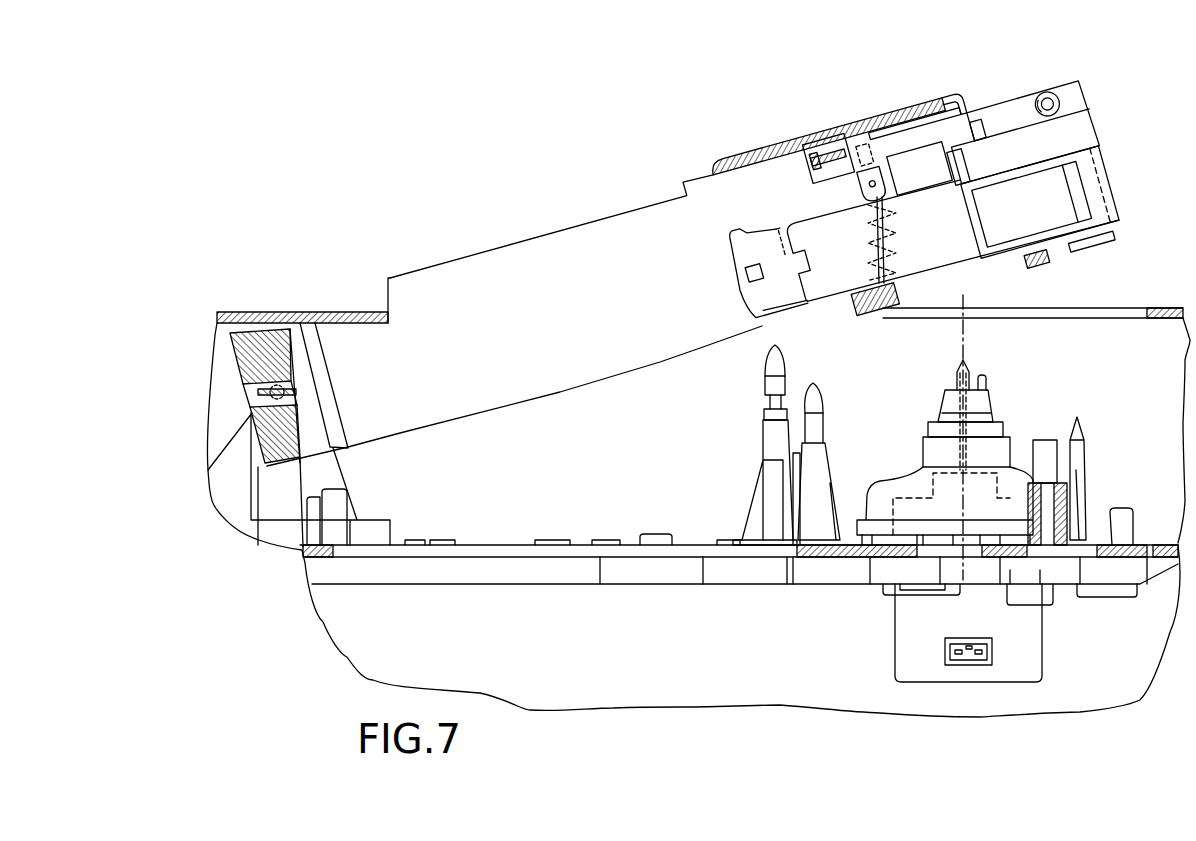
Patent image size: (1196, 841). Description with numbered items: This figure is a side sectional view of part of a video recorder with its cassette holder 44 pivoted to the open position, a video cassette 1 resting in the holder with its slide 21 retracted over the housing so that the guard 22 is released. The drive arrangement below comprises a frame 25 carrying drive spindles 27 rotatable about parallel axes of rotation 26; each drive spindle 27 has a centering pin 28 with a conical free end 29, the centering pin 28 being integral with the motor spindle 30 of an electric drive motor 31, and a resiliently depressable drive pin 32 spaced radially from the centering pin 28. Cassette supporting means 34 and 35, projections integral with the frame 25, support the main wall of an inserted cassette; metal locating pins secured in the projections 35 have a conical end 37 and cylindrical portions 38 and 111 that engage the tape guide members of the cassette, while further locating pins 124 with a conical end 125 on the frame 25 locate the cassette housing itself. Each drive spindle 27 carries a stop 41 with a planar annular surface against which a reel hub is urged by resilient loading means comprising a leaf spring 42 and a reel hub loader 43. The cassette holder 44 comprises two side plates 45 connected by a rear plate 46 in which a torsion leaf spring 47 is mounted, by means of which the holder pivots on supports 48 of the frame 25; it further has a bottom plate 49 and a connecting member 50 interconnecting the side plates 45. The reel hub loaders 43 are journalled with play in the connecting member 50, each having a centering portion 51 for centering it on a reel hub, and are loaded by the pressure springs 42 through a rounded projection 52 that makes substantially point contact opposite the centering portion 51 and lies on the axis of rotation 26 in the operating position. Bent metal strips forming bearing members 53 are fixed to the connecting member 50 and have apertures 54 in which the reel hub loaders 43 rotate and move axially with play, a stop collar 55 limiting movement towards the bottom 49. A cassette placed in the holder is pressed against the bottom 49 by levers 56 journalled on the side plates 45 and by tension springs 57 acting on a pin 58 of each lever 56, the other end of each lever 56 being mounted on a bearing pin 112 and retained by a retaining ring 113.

The video cassette 1 is at (1112, 144).
The slide 21 is at (812, 230).
The guard 22 is at (740, 255).
The frame 25 is at (515, 577).
The axis of rotation 26 is at (968, 328).
The drive spindle 27 is at (970, 443).
The centering pin 28 is at (957, 383).
The conical free end 29 is at (972, 378).
The motor spindle 30 is at (993, 443).
The electric drive motor 31 is at (912, 628).
The drive pin 32 is at (987, 382).
The cassette supporting means 34 is at (1077, 458).
The cassette supporting means 35 is at (766, 445).
The conical end 37 is at (770, 363).
The cylindrical portion 38 is at (785, 375).
The stop 41 is at (937, 427).
The leaf spring 42 is at (883, 127).
The reel hub loader 43 is at (917, 162).
The cassette holder 44 is at (1053, 120).
The side plate 45 is at (568, 247).
The rear plate 46 is at (257, 355).
The torsion leaf spring 47 is at (253, 402).
The support 48 is at (228, 485).
The bottom plate 49 is at (983, 268).
The connecting member 50 is at (747, 160).
The centering portion 51 is at (957, 162).
The rounded projection 52 is at (918, 128).
The bearing member 53 is at (848, 165).
The aperture 54 is at (982, 128).
The stop collar 55 is at (960, 113).
The lever 56 is at (1027, 127).
The tension spring 57 is at (897, 247).
The pin 58 is at (873, 185).
The cylindrical portion 111 is at (766, 416).
The bearing pin 112 is at (1048, 97).
The retaining ring 113 is at (1060, 97).
The locating pin 124 is at (835, 461).
The conical end 125 is at (815, 400).